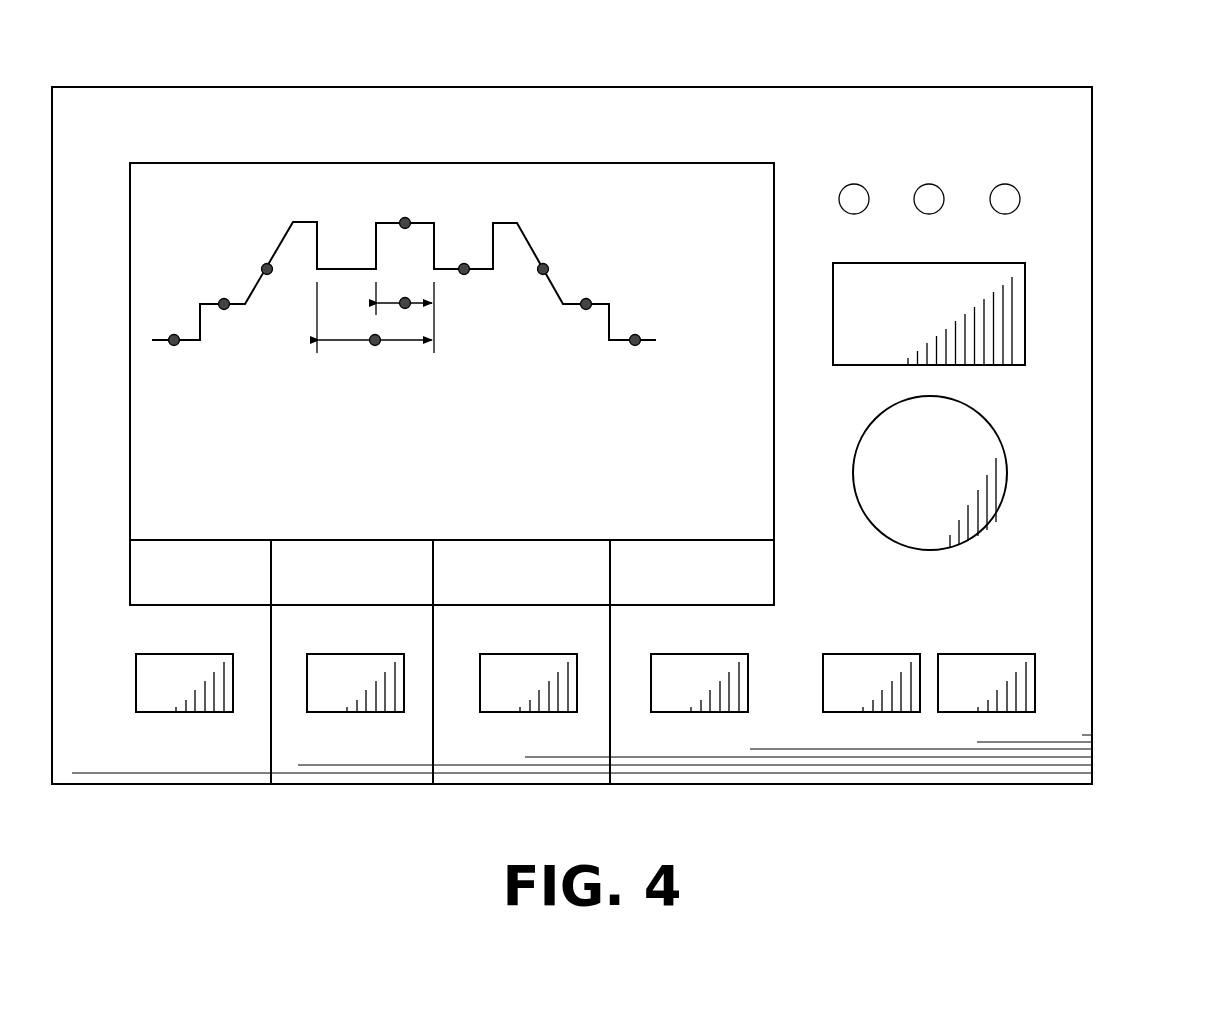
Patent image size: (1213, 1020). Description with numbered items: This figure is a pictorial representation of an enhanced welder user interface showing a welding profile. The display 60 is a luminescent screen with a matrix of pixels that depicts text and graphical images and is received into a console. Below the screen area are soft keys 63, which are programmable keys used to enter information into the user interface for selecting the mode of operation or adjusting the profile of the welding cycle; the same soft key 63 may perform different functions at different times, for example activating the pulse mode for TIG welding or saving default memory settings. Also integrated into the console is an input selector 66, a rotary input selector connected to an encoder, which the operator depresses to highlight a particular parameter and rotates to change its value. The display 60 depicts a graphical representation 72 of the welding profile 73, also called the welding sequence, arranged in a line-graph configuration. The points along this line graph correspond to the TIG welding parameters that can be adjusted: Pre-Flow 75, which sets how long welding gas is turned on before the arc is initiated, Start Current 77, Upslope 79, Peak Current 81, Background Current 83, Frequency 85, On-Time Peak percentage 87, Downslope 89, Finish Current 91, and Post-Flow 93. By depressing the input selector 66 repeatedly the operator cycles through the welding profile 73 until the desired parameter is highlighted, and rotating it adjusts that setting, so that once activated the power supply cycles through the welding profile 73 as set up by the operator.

The display 60 is at (705, 195).
The soft keys 63 is at (192, 792).
The input selector 66 is at (1122, 419).
The graphical representation 72 is at (231, 246).
The welding profile 73 is at (258, 193).
The Pre-Flow 75 is at (174, 346).
The Start Current 77 is at (224, 310).
The Upslope 79 is at (272, 272).
The Peak Current 81 is at (405, 217).
The Background Current 83 is at (469, 273).
The Frequency 85 is at (375, 346).
The On-Time Peak percentage 87 is at (405, 297).
The Downslope 89 is at (538, 273).
The Finish Current 91 is at (586, 310).
The Post-Flow 93 is at (635, 346).